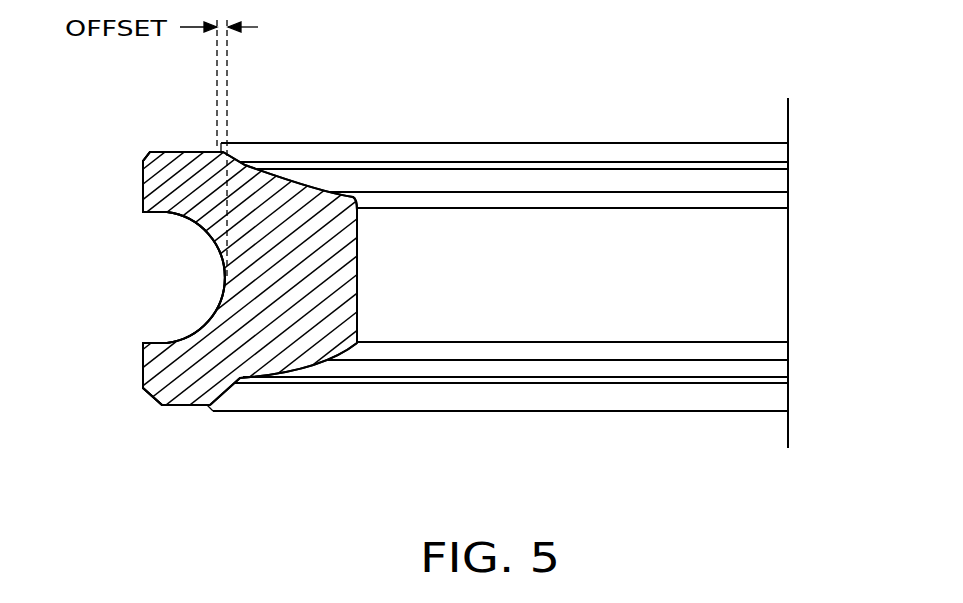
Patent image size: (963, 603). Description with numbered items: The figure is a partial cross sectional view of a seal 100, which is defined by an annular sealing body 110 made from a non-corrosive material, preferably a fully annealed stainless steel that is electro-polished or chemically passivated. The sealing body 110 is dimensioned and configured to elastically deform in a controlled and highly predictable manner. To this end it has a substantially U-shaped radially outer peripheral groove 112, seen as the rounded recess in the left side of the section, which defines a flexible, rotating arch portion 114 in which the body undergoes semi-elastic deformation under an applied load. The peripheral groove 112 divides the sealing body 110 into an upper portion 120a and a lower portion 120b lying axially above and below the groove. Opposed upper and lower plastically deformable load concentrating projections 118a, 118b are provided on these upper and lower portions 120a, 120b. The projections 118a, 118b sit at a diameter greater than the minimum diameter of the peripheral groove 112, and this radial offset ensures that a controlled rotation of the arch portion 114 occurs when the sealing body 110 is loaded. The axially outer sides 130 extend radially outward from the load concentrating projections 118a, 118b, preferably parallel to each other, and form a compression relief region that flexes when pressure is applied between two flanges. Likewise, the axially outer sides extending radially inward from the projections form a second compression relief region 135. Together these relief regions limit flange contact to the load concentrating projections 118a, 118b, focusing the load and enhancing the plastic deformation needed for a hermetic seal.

The seal 100 is at (743, 90).
The sealing body 110 is at (300, 326).
The radially outer peripheral groove 112 is at (206, 233).
The arch portion 114 is at (210, 246).
The upper load concentrating projection 118a is at (688, 142).
The lower load concentrating projection 118b is at (208, 410).
The upper portion of the sealing body 120a is at (154, 158).
The lower portion of the sealing body 120b is at (155, 404).
The axially outer sides 130 is at (157, 152).
The second compression relief region 135 is at (330, 190).